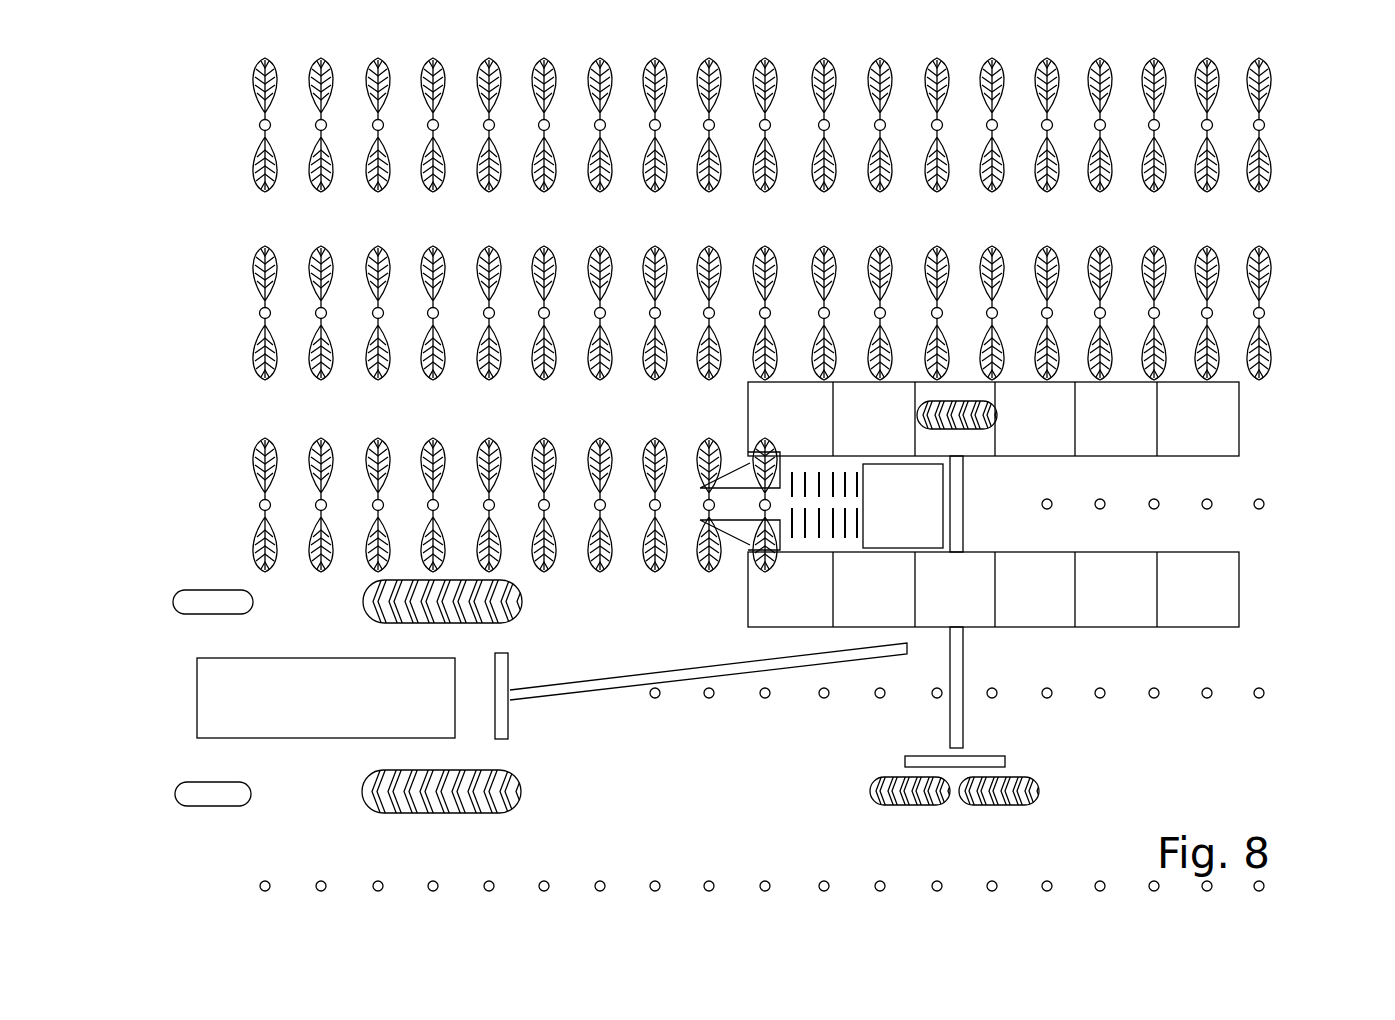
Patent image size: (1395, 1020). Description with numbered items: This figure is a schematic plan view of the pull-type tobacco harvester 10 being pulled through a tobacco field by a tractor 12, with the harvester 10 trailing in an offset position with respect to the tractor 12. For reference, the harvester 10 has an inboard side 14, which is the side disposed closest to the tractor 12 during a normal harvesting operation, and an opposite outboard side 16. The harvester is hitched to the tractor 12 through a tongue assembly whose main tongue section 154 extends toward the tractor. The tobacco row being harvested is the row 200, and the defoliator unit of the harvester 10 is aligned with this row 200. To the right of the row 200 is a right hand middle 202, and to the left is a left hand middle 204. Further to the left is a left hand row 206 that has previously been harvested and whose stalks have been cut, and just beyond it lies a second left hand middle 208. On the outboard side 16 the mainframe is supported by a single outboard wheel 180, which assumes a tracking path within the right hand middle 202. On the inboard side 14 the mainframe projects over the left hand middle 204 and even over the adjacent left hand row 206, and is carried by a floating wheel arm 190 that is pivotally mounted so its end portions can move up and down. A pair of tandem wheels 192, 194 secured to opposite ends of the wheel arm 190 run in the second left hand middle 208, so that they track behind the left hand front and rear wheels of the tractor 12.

The pull-type tobacco harvester 10 is at (1039, 626).
The tractor 12 is at (521, 714).
The inboard side 14 is at (997, 650).
The outboard side 16 is at (963, 340).
The main tongue section 154 is at (548, 700).
The outboard wheel 180 is at (965, 432).
The floating wheel arm 190 is at (925, 755).
The tandem wheel 192 is at (880, 805).
The tandem wheel 194 is at (1020, 808).
The tobacco row 200 is at (250, 497).
The right hand middle 202 is at (292, 420).
The left hand middle 204 is at (290, 588).
The left hand row 206 is at (740, 690).
The second left hand middle 208 is at (1165, 794).